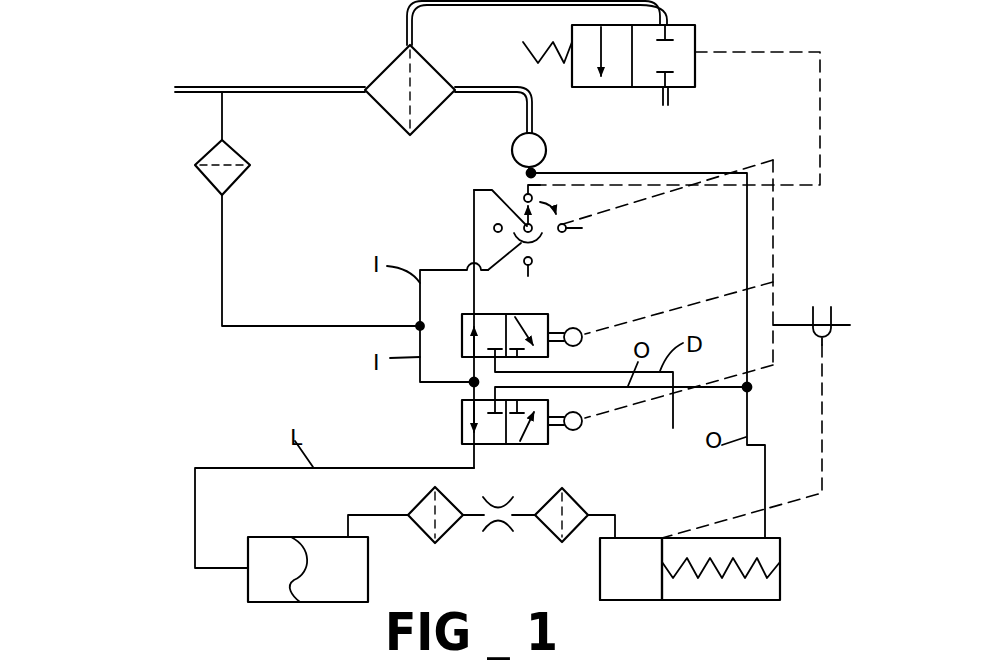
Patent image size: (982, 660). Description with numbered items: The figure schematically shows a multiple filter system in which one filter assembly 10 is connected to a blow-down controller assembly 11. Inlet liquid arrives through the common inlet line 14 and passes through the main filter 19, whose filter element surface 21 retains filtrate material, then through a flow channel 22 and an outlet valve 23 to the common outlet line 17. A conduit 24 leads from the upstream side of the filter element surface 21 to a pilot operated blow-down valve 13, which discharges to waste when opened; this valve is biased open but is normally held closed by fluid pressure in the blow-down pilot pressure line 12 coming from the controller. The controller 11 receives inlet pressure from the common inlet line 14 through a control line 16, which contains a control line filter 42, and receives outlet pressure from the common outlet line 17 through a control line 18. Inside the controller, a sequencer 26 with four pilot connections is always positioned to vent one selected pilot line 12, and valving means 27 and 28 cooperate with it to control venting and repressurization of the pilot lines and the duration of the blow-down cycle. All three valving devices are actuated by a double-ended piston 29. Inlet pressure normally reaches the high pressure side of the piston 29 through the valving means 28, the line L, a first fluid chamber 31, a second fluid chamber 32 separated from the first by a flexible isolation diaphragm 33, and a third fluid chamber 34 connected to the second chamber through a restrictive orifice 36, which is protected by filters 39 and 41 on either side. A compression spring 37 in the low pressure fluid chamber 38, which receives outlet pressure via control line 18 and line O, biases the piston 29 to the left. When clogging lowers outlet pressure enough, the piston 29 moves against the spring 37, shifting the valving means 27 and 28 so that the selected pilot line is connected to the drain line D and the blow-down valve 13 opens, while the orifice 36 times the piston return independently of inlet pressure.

The filter assembly 10 is at (762, 33).
The blow-down controller assembly 11 is at (802, 244).
The blow-down pilot pressure line 12 is at (819, 118).
The pilot operated blow-down valve 13 is at (695, 28).
The common inlet line 14 is at (239, 85).
The control line 16 is at (218, 260).
The common outlet line 17 is at (527, 171).
The control line 18 is at (677, 173).
The main filter 19 is at (393, 100).
The filter element surface 21 is at (410, 72).
The flow channel 22 is at (535, 104).
The outlet valve 23 is at (548, 150).
The conduit 24 is at (478, 3).
The sequencer 26 is at (455, 197).
The valving means 27 is at (550, 320).
The valving means 28 is at (550, 442).
The double-ended piston 29 is at (660, 582).
The first fluid chamber 31 is at (315, 574).
The second fluid chamber 32 is at (337, 560).
The flexible isolation diaphragm 33 is at (292, 583).
The third fluid chamber 34 is at (637, 553).
The restrictive orifice 36 is at (509, 508).
The compression spring 37 is at (742, 575).
The low pressure fluid chamber 38 is at (751, 592).
The filter 39 is at (420, 535).
The filter 41 is at (579, 500).
The control line filter 42 is at (205, 156).